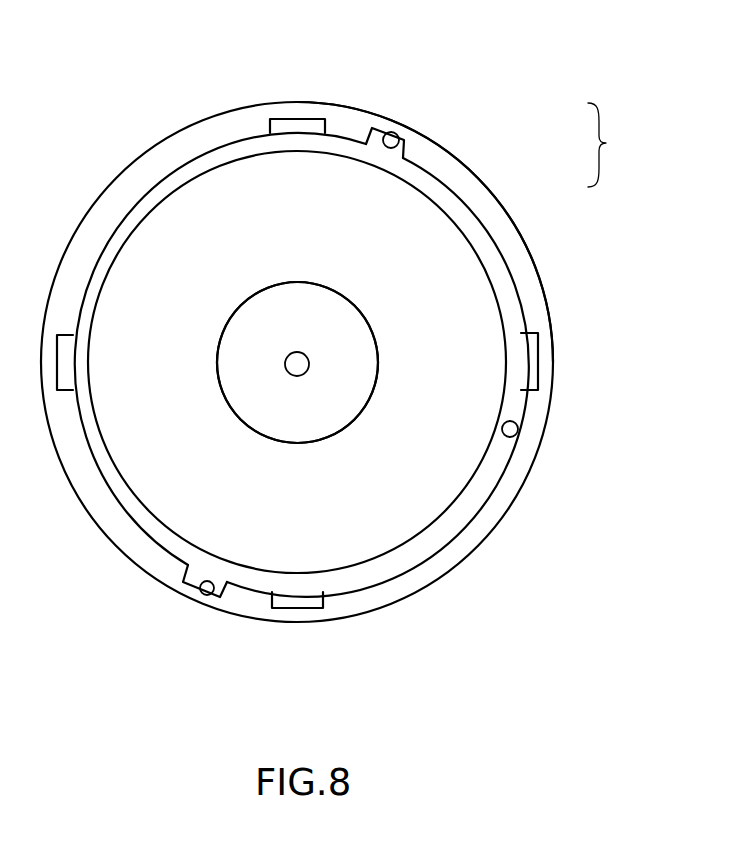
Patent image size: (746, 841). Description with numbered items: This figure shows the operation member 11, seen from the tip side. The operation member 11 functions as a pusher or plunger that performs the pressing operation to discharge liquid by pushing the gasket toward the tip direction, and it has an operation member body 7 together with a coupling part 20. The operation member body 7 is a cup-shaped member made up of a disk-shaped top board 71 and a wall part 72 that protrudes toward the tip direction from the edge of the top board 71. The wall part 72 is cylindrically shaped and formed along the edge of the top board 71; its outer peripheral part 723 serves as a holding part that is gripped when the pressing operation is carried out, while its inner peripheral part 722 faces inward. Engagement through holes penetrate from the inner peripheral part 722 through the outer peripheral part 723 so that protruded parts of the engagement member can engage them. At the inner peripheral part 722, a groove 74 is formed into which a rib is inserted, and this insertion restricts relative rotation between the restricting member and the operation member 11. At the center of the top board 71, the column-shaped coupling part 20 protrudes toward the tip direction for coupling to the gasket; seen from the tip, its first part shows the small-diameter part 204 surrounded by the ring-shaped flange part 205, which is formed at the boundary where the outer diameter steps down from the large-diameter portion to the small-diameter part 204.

The operation member body 7 is at (474, 162).
The operation member 11 is at (614, 145).
The coupling part 20 is at (343, 290).
The flange part 205 is at (362, 311).
The small-diameter part 204 is at (300, 363).
The wall part 72 is at (527, 289).
The outer peripheral part 723 is at (553, 402).
The inner peripheral part 722 is at (509, 438).
The top board 71 is at (430, 473).
The groove 74 is at (403, 142).